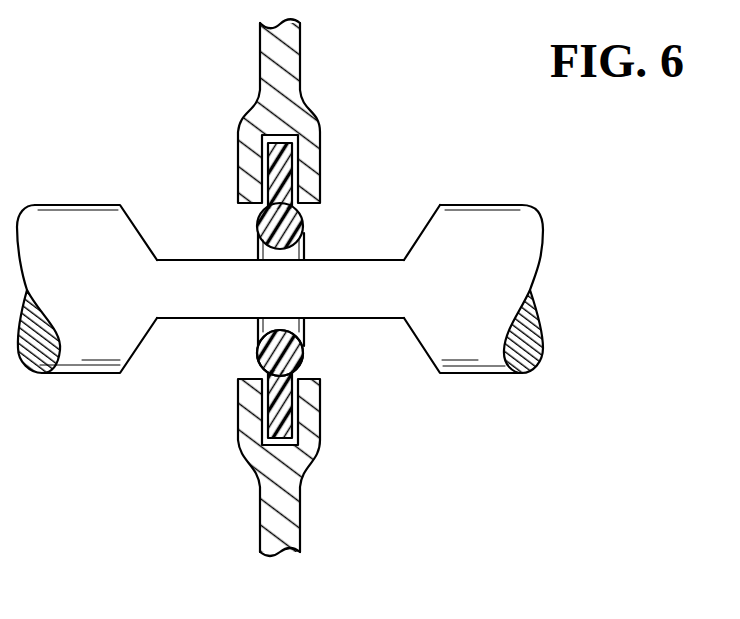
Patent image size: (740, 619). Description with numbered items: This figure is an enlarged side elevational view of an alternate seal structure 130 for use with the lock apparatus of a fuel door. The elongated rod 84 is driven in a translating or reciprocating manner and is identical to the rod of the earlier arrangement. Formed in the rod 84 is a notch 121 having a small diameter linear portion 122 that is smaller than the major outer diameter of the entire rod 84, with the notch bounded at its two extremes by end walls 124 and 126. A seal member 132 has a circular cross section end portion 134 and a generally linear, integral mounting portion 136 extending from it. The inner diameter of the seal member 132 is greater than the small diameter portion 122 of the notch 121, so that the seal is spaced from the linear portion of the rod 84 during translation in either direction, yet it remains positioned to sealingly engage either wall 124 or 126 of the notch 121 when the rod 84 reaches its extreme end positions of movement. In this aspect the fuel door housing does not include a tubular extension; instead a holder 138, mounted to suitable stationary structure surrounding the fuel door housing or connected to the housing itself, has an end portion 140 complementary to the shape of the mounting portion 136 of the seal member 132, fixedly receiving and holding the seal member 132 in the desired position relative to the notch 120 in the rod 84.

The rod 84 is at (491, 204).
The notch 120 is at (288, 236).
The notch 121 is at (377, 244).
The small diameter portion 122 is at (211, 260).
The end wall 124 is at (128, 218).
The end wall 126 is at (428, 222).
The alternate seal structure 130 is at (225, 93).
The seal member 132 is at (310, 360).
The circular cross section end portion 134 is at (302, 338).
The mounting portion 136 is at (280, 415).
The holder 138 is at (275, 521).
The end portion 140 is at (247, 417).